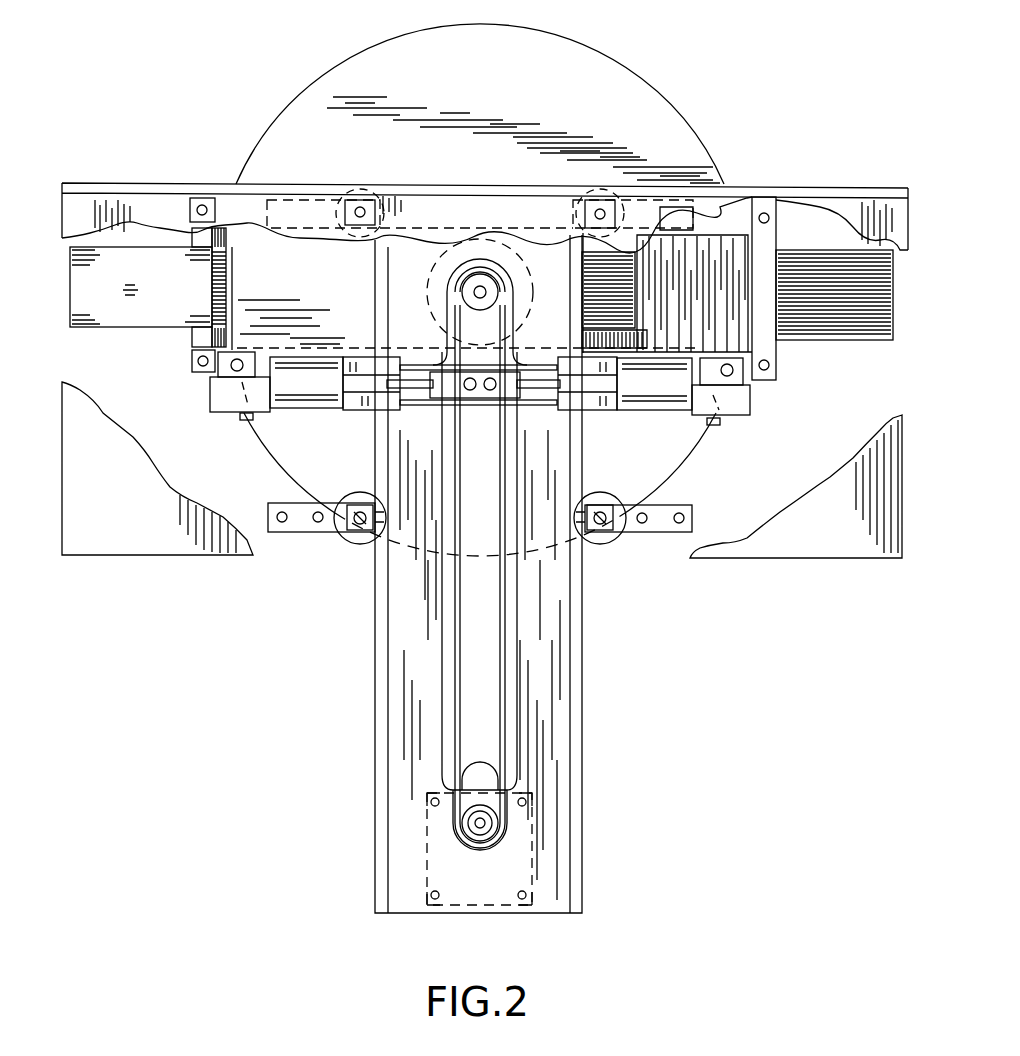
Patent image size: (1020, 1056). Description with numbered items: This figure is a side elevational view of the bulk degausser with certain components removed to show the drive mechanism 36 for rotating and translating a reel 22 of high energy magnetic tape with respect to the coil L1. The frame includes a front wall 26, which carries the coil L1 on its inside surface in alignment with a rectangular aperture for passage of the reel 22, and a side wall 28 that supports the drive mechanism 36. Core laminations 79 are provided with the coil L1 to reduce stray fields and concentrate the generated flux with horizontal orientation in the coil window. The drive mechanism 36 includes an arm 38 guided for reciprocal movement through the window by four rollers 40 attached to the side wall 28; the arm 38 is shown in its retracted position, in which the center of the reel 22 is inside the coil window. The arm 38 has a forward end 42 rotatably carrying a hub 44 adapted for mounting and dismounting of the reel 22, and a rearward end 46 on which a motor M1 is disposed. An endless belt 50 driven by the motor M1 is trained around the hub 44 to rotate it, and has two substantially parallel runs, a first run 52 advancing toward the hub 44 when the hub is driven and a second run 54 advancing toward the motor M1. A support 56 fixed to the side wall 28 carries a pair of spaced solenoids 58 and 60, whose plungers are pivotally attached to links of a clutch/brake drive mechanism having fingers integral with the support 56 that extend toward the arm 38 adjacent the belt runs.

The reel 22 is at (645, 80).
The front wall 26 is at (119, 183).
The side wall 28 is at (92, 545).
The drive mechanism 36 is at (620, 680).
The arm 38 is at (583, 785).
The rollers 40 is at (355, 185).
The forward end 42 is at (405, 262).
The hub 44 is at (470, 292).
The rearward end 46 is at (395, 843).
The endless belt 50 is at (454, 760).
The first run 52 is at (503, 725).
The second run 54 is at (457, 720).
The support 56 is at (358, 406).
The solenoid 58 is at (665, 408).
The solenoid 60 is at (292, 398).
The core laminations 79 is at (210, 330).
The coil L1 is at (72, 308).
The motor M1 is at (485, 826).